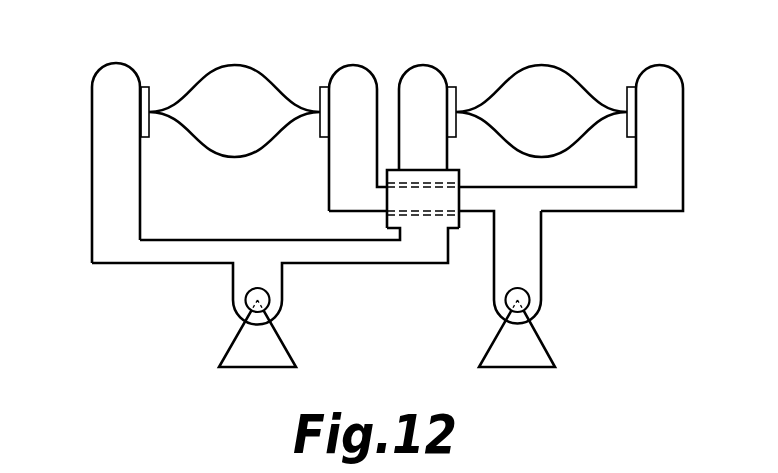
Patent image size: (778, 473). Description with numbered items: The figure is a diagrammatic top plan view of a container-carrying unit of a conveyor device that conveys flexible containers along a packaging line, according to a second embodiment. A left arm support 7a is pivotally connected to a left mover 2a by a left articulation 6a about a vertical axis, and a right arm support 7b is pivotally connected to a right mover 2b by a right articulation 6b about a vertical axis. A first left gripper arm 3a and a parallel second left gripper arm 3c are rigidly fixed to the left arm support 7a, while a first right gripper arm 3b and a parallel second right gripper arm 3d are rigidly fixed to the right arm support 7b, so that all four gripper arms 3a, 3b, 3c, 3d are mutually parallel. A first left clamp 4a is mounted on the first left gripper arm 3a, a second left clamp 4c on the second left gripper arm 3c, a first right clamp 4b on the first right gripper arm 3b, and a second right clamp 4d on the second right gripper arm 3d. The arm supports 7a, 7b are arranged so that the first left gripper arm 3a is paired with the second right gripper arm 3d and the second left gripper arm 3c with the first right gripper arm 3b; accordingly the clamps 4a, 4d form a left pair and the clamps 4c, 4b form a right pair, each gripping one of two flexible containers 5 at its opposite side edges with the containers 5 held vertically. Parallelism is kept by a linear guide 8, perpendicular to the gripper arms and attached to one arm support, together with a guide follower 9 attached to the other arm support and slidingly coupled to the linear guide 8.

The left mover 2a is at (258, 360).
The right mover 2b is at (518, 362).
The first left gripper arm 3a is at (102, 133).
The first right gripper arm 3b is at (673, 133).
The second left gripper arm 3c is at (422, 73).
The second right gripper arm 3d is at (353, 73).
The first left clamp 4a is at (145, 90).
The first right clamp 4b is at (628, 90).
The second left clamp 4c is at (452, 90).
The second right clamp 4d is at (322, 90).
The flexible container 5 is at (233, 67).
The left articulation 6a is at (257, 300).
The right articulation 6b is at (518, 300).
The left arm support 7a is at (195, 245).
The right arm support 7b is at (593, 205).
The linear guide 8 is at (473, 205).
The guide follower 9 is at (423, 215).